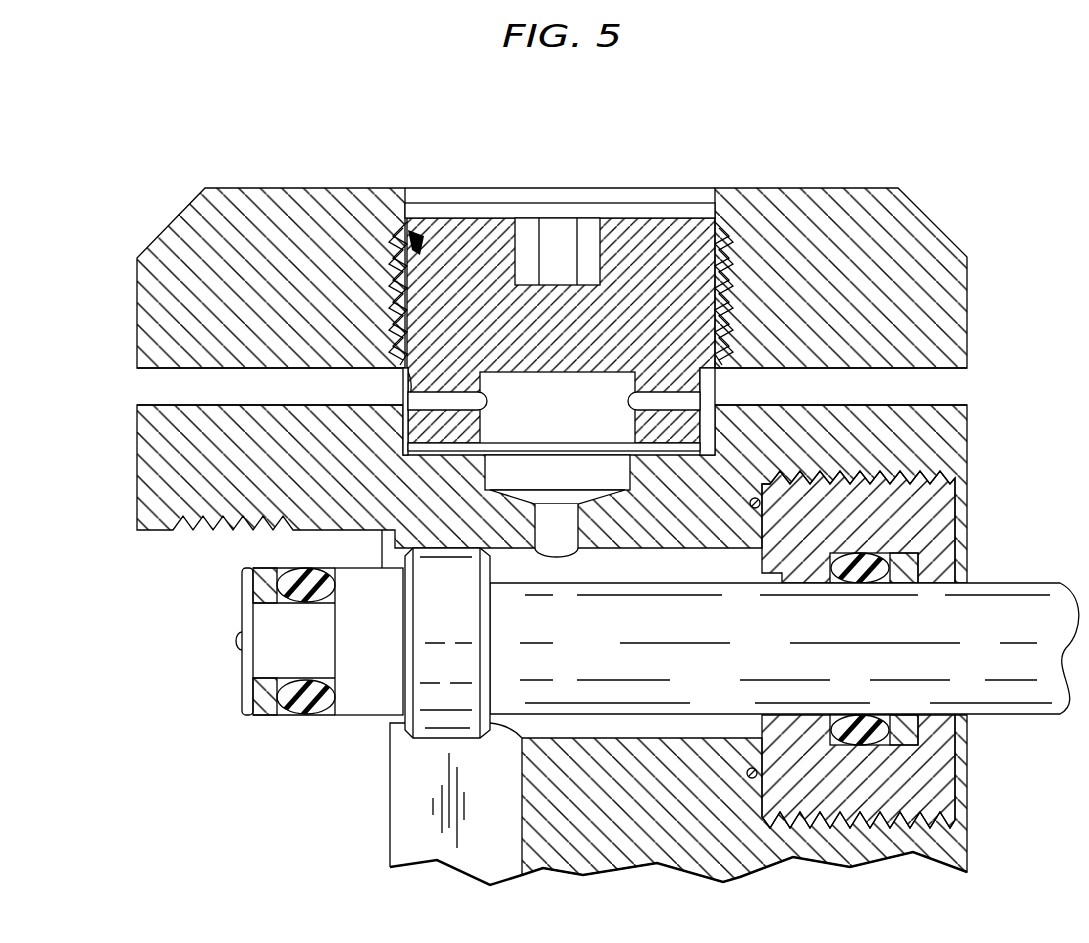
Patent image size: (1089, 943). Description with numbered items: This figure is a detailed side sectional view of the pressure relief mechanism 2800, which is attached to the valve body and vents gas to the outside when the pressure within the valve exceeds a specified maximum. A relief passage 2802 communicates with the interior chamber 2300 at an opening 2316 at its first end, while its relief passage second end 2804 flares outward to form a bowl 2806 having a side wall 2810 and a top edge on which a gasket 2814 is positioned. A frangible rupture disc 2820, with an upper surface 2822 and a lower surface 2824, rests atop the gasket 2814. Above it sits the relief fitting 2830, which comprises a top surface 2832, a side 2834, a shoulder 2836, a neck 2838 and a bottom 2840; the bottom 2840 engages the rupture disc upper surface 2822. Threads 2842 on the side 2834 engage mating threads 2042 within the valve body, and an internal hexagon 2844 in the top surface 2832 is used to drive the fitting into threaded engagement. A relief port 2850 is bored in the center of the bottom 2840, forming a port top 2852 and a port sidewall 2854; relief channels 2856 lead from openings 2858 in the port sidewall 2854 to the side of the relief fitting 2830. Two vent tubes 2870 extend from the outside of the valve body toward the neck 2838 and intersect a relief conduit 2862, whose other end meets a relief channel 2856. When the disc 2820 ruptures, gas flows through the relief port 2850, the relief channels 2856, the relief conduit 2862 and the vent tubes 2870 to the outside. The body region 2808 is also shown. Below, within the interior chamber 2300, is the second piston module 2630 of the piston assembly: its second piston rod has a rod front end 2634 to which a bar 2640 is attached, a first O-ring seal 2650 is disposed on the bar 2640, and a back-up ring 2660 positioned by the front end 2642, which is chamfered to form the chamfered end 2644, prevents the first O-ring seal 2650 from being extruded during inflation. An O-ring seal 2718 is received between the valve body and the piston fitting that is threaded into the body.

The pressure relief mechanism 2800 is at (452, 160).
The relief fitting 2830 is at (420, 240).
The top surface 2832 is at (490, 218).
The internal hexagon 2844 is at (553, 230).
The side 2834 is at (395, 238).
The threads 2042 is at (395, 268).
The threads 2842 is at (397, 306).
The shoulder 2836 is at (405, 375).
The neck 2838 is at (405, 405).
The lower surface 2824 is at (407, 447).
The body shoulder 2808 is at (483, 468).
The relief passage second end 2804 is at (550, 497).
The side wall 2810 is at (608, 452).
The relief passage 2802 is at (547, 532).
The bowl 2806 is at (590, 497).
The gasket 2814 is at (620, 468).
The frangible rupture disc 2820 is at (705, 455).
The upper surface 2822 is at (712, 438).
The bottom 2840 is at (457, 447).
The openings 2858 is at (490, 408).
The relief channels 2856 is at (450, 400).
The port top 2852 is at (523, 372).
The relief port 2850 is at (585, 372).
The port sidewall 2854 is at (638, 372).
The relief conduit 2862 is at (712, 388).
The vent tubes 2870 is at (966, 388).
The second piston module 2630 is at (365, 567).
The bar 2640 is at (313, 623).
The chamfered end 2644 is at (240, 665).
The front end 2642 is at (250, 683).
The back-up ring 2660 is at (260, 710).
The first O-ring seal 2650 is at (292, 710).
The rod front end 2634 is at (327, 717).
The opening 2316 is at (557, 556).
The interior chamber 2300 is at (727, 573).
The O-ring seal 2718 is at (750, 768).